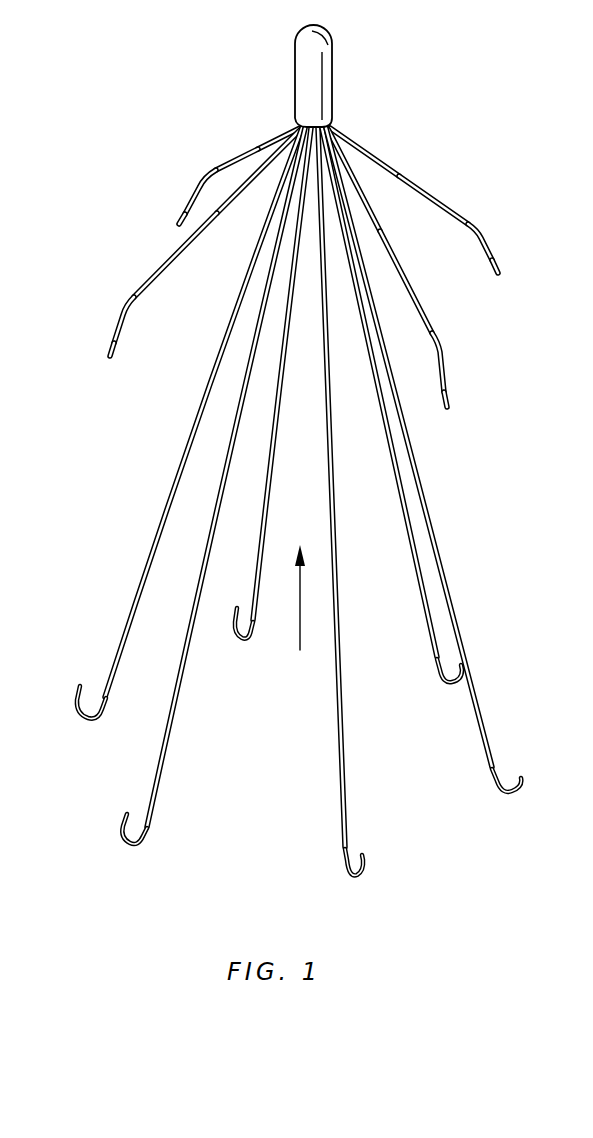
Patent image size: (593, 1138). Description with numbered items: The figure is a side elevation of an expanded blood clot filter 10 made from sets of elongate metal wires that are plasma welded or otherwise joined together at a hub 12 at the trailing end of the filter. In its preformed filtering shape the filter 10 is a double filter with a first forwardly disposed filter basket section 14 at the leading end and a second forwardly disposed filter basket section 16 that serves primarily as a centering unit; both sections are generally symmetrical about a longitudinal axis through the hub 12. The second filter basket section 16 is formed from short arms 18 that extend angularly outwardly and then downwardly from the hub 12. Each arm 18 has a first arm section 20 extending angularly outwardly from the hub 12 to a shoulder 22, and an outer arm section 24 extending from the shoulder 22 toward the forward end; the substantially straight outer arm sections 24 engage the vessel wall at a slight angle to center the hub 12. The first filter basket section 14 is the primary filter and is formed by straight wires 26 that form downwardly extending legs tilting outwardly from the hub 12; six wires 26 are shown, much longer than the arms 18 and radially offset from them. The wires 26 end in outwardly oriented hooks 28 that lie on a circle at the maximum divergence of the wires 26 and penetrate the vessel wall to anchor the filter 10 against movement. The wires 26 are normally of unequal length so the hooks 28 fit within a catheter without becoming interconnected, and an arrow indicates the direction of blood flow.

The blood clot filter 10 is at (298, 450).
The hub 12 is at (333, 62).
The first forwardly disposed filter basket section 14 is at (298, 502).
The second forwardly disposed filter basket section 16 is at (286, 252).
The arms 18 is at (252, 165).
The first arm section 20 is at (236, 172).
The shoulder 22 is at (210, 170).
The outer arm section 24 is at (180, 222).
The wires 26 is at (207, 535).
The hooks 28 is at (122, 832).